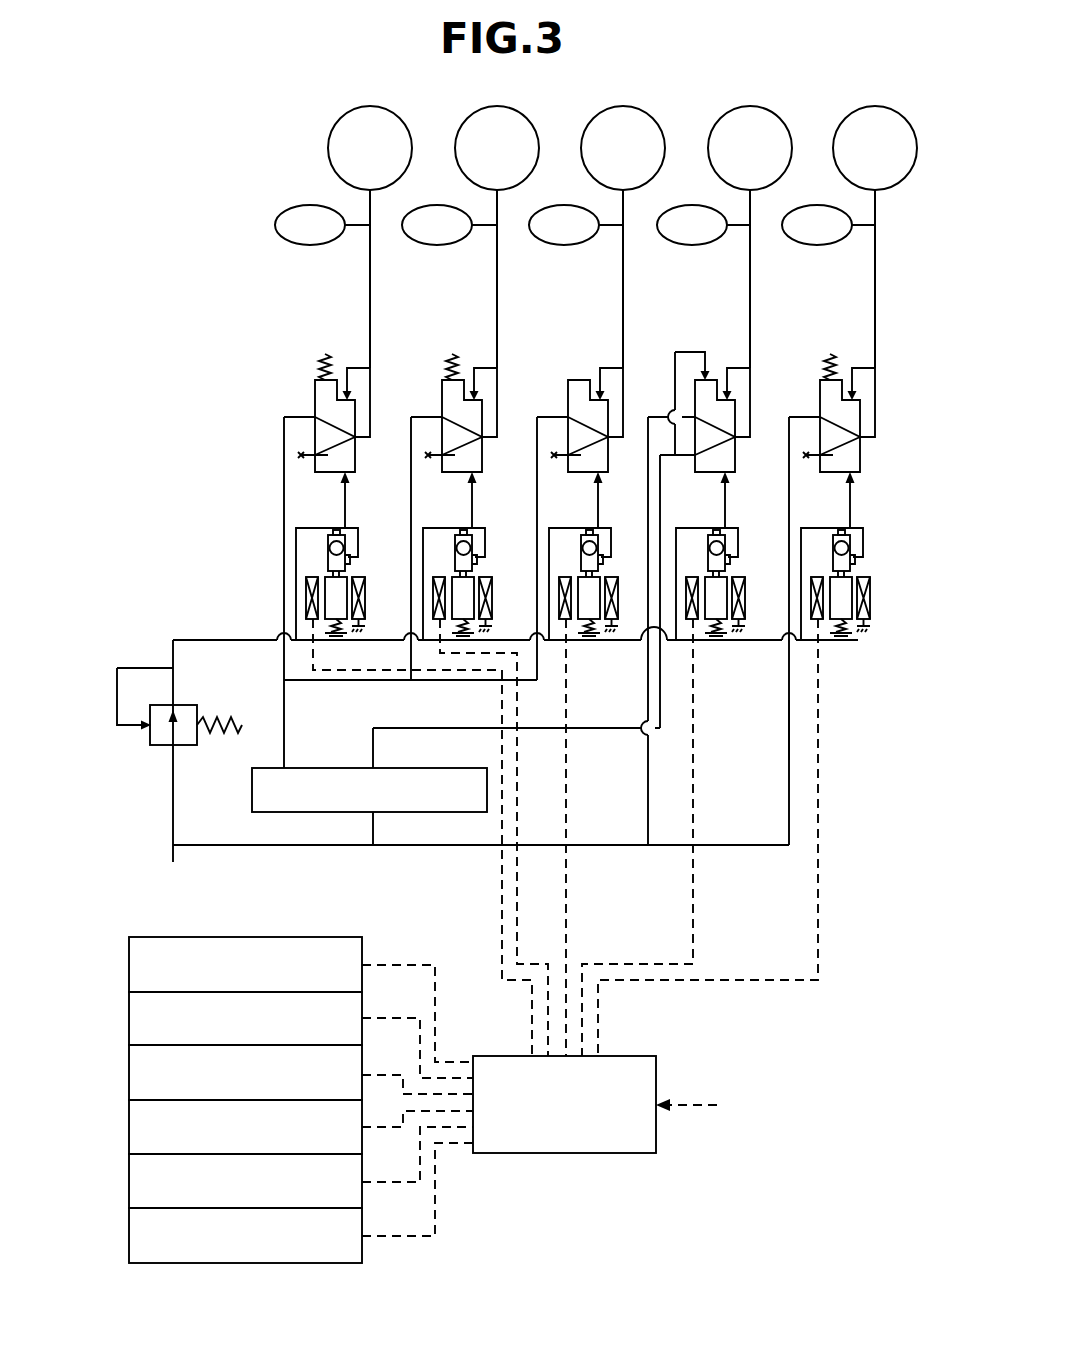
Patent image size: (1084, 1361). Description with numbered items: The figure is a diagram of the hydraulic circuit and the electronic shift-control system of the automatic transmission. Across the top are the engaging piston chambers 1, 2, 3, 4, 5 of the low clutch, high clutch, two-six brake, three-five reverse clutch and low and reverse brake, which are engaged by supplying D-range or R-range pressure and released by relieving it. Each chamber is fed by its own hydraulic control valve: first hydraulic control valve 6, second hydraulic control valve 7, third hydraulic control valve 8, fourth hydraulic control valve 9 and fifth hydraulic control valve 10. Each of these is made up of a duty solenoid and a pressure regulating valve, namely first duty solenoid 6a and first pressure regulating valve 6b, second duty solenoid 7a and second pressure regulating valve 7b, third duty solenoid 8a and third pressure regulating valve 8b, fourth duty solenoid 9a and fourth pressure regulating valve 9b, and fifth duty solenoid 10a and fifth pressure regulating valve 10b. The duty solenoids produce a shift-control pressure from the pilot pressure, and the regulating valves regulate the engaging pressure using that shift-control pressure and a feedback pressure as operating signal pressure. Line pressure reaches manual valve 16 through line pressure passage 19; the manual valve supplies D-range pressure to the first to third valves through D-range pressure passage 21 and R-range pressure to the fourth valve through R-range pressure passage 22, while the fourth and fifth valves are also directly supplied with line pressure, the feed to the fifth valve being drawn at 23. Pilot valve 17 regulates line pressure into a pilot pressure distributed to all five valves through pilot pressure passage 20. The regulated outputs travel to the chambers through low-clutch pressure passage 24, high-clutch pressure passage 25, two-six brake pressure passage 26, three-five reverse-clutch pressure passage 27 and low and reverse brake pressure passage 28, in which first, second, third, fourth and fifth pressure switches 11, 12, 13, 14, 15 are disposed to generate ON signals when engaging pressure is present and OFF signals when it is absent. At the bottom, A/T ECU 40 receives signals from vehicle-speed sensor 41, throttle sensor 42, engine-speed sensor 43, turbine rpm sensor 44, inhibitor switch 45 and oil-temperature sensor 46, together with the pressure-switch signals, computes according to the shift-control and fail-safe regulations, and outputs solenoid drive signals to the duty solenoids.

The engaging piston chamber 1 is at (401, 118).
The engaging piston chamber 2 is at (527, 118).
The engaging piston chamber 3 is at (653, 118).
The engaging piston chamber 4 is at (780, 118).
The engaging piston chamber 5 is at (905, 118).
The first hydraulic control valve 6 is at (310, 462).
The first duty solenoid 6a is at (325, 527).
The first pressure regulating valve 6b is at (303, 392).
The second hydraulic control valve 7 is at (438, 462).
The second duty solenoid 7a is at (453, 527).
The second pressure regulating valve 7b is at (431, 392).
The third hydraulic control valve 8 is at (564, 463).
The third duty solenoid 8a is at (580, 527).
The third pressure regulating valve 8b is at (558, 392).
The fourth hydraulic control valve 9 is at (694, 557).
The fourth duty solenoid 9a is at (708, 527).
The fourth pressure regulating valve 9b is at (719, 347).
The fifth hydraulic control valve 10 is at (814, 565).
The fifth duty solenoid 10a is at (833, 527).
The fifth pressure regulating valve 10b is at (810, 392).
The first pressure switch 11 is at (308, 204).
The second pressure switch 12 is at (434, 204).
The third pressure switch 13 is at (561, 204).
The fourth pressure switch 14 is at (691, 204).
The fifth pressure switch 15 is at (816, 204).
The manual valve 16 is at (420, 812).
The pilot valve 17 is at (160, 746).
The line pressure passage 19 is at (263, 843).
The pilot pressure passage 20 is at (248, 641).
The D-range pressure passage 21 is at (412, 681).
The R-range pressure passage 22 is at (603, 727).
The line pressure oil passage to fifth valve 23 is at (789, 724).
The low-clutch pressure passage 24 is at (370, 268).
The high-clutch pressure passage 25 is at (497, 268).
The 2-6 brake pressure passage 26 is at (623, 268).
The 3-5 reverse-clutch pressure passage 27 is at (750, 268).
The low and reverse brake pressure passage 28 is at (875, 268).
The A/T ECU 40 is at (622, 1056).
The vehicle-speed sensor 41 is at (129, 966).
The throttle sensor 42 is at (129, 1019).
The engine-speed sensor 43 is at (129, 1073).
The turbine rpm sensor 44 is at (129, 1127).
The inhibitor switch 45 is at (129, 1182).
The oil-temperature sensor 46 is at (129, 1236).